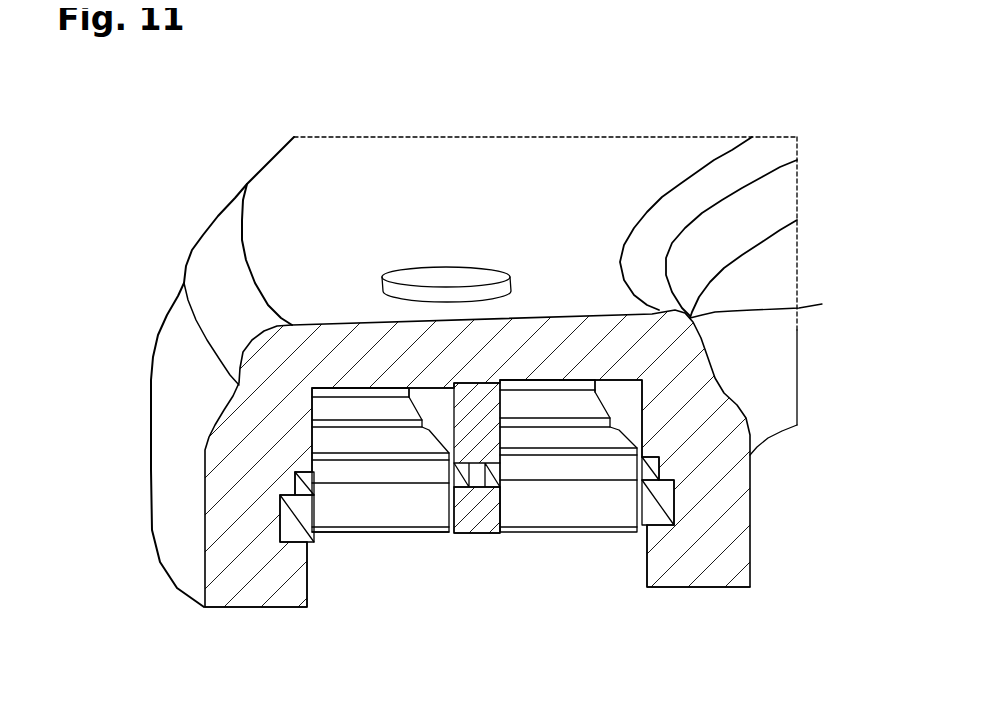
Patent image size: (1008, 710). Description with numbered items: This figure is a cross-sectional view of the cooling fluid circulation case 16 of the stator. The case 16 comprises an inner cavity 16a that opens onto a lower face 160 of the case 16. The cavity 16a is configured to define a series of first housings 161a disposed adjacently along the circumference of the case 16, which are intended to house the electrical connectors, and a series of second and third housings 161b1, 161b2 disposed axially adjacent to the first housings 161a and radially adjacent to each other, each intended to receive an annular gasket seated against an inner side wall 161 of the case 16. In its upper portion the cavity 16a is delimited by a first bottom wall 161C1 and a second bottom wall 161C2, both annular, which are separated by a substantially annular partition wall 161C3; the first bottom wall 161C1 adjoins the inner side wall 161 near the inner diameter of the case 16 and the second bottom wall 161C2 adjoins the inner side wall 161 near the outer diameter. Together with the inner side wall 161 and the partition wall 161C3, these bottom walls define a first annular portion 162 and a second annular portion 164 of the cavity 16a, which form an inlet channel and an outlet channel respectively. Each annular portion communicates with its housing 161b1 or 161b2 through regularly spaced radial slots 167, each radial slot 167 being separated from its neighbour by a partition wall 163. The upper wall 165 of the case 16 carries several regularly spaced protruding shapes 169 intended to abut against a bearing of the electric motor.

The case 16 is at (194, 372).
The inner cavity 16a is at (380, 605).
The lower face 160 is at (504, 359).
The inner side wall 161 is at (477, 589).
The first housings 161a is at (453, 532).
The second housing 161b1 is at (746, 485).
The third housing 161b2 is at (183, 462).
The first bottom wall 161C1 is at (591, 236).
The second bottom wall 161C2 is at (233, 342).
The partition wall 161C3 is at (487, 555).
The first annular portion 162 is at (745, 269).
The partition wall 163 is at (474, 456).
The second annular portion 164 is at (566, 359).
The upper wall 165 is at (545, 296).
The radial slots 167 is at (469, 402).
The protruding shapes 169 is at (446, 196).